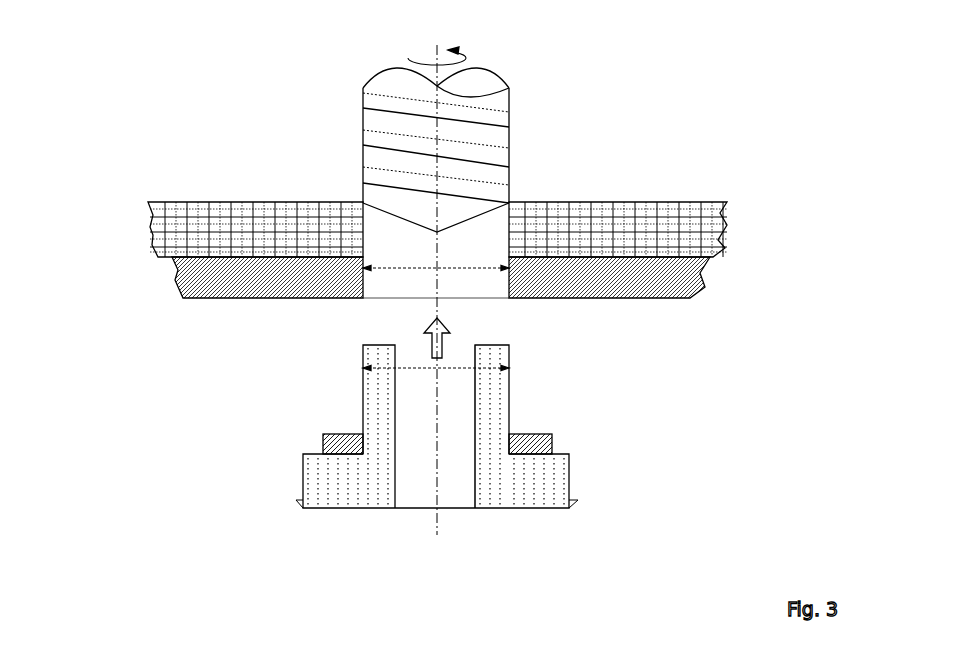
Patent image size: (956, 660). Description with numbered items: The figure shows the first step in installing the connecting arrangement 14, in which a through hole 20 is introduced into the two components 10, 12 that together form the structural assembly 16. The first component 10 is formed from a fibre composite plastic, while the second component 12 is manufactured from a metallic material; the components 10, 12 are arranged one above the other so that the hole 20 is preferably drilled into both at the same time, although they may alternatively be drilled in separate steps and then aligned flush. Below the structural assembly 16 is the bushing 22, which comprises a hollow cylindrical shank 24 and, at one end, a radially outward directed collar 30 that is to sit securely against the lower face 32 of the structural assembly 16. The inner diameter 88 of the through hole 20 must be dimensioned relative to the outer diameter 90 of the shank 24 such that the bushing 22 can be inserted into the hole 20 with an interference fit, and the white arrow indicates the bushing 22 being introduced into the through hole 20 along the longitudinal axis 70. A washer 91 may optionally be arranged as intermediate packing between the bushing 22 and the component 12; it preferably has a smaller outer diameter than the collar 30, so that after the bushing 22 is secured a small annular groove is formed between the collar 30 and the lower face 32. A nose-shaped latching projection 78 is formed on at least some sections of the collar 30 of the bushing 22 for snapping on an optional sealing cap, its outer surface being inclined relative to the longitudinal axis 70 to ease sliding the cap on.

The first component 10 is at (254, 240).
The second component 12 is at (612, 287).
The connecting arrangement 14 is at (286, 86).
The structural assembly 16 is at (393, 250).
The through hole 20 is at (455, 285).
The bushing 22 is at (428, 329).
The hollow cylindrical shank 24 is at (380, 386).
The collar 30 is at (569, 477).
The lower face 32 is at (652, 302).
The longitudinal axis 70 is at (437, 535).
The latching projection 78 is at (289, 498).
The inner diameter 88 is at (408, 272).
The outer diameter 90 is at (447, 367).
The washer 91 is at (552, 445).